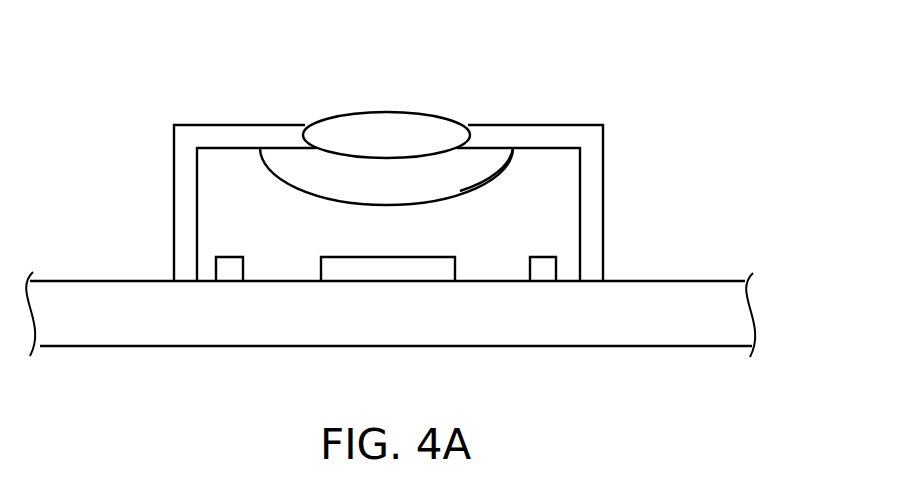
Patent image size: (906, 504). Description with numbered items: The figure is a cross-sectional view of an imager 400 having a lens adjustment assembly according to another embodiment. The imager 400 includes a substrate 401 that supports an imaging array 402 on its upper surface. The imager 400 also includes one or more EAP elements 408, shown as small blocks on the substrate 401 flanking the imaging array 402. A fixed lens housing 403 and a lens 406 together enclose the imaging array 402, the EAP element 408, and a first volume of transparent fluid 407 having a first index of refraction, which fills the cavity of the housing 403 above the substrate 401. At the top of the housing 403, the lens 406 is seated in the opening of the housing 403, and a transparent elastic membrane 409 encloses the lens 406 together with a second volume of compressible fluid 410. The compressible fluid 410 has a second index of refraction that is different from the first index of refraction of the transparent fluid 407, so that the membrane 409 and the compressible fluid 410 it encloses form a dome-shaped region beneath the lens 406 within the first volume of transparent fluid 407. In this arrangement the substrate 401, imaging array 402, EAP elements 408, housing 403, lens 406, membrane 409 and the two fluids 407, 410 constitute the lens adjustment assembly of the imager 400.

The imager 400 is at (86, 112).
The substrate 401 is at (706, 328).
The imaging array 402 is at (353, 272).
The fixed lens housing 403 is at (183, 205).
The lens 406 is at (405, 146).
The first volume of transparent fluid 407 is at (255, 208).
The EAP element 408 is at (547, 272).
The transparent elastic membrane 409 is at (493, 181).
The second volume of compressible fluid 410 is at (375, 190).